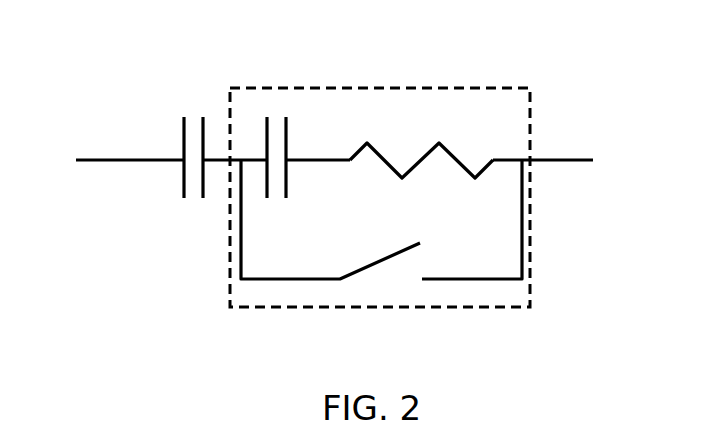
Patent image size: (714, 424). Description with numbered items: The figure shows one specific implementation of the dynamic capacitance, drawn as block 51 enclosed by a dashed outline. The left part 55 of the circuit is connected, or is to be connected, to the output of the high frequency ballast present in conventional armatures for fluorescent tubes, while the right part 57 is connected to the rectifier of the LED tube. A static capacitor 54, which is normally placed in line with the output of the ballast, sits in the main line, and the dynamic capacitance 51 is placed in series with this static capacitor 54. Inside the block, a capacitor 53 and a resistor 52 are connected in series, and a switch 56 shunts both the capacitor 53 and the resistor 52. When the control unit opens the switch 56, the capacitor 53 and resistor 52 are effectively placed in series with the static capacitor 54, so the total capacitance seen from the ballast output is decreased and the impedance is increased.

The dynamic capacitance 51 is at (477, 86).
The resistor 52 is at (377, 150).
The capacitor 53 is at (287, 132).
The static capacitor 54 is at (184, 141).
The left part 55 is at (120, 158).
The switch 56 is at (391, 285).
The right part 57 is at (578, 157).